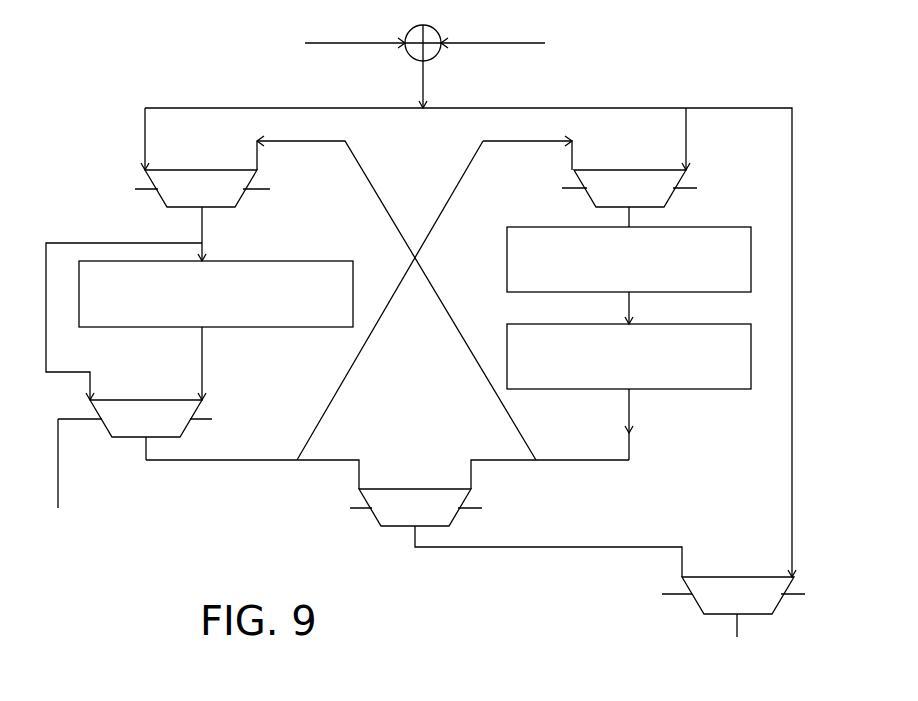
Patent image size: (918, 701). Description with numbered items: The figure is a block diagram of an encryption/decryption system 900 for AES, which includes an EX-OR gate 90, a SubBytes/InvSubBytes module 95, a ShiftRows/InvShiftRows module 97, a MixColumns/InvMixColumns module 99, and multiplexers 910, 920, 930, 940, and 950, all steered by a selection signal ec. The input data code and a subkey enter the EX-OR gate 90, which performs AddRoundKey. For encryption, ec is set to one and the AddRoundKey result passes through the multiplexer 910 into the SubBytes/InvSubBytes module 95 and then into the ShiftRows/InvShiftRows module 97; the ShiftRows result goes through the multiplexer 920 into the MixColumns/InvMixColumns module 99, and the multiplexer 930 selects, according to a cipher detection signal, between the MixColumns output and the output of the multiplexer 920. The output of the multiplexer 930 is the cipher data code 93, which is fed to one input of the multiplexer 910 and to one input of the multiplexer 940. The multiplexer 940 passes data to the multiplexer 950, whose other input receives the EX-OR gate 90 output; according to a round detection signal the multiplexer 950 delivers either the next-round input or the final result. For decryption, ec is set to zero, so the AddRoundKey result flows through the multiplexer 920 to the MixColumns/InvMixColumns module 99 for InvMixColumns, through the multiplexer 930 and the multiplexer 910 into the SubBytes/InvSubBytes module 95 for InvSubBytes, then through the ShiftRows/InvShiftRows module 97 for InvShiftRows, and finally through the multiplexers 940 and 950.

The encryption/decryption system 900 is at (738, 60).
The EX-OR gate 90 is at (442, 62).
The cipher data code 93 is at (445, 205).
The multiplexer 920 is at (133, 184).
The multiplexer 910 is at (696, 173).
The MixColumns/InvMixColumns module 99 is at (270, 260).
The SubBytes/InvSubBytes module 95 is at (555, 227).
The ShiftRows/InvShiftRows module 97 is at (672, 390).
The multiplexer 930 is at (215, 405).
The multiplexer 940 is at (358, 519).
The multiplexer 950 is at (688, 619).